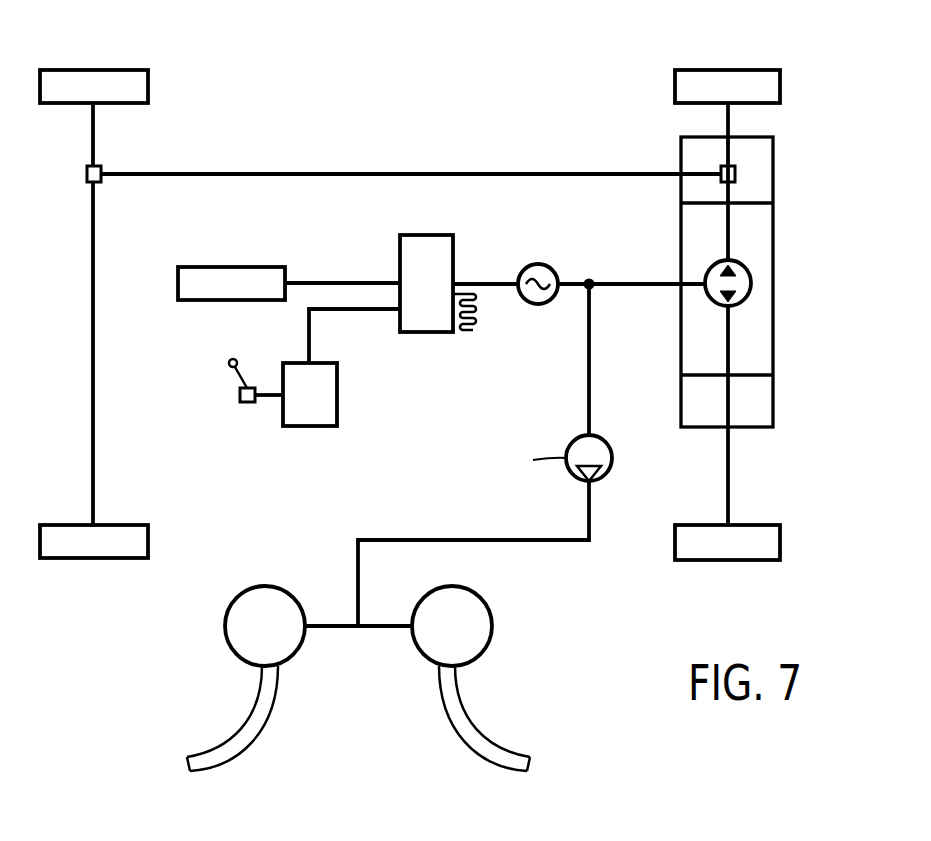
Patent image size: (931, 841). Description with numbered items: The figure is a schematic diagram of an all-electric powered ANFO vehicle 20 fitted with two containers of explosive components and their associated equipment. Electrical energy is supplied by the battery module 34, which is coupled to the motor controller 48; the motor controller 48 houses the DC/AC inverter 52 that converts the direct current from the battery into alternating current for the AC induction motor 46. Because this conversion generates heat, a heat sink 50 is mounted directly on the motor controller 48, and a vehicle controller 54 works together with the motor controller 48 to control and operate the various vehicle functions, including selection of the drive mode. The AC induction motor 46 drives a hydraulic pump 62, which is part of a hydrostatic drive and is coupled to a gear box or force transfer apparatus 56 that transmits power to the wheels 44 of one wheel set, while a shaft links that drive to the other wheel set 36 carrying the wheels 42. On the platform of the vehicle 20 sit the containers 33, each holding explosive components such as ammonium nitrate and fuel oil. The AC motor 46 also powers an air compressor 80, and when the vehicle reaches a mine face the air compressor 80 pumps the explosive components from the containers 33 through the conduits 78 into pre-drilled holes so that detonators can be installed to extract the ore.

The all-electric powered ANFO vehicle 20 is at (548, 55).
The container 33 is at (267, 586).
The battery module 34 is at (231, 267).
The wheel set 36 is at (92, 351).
The wheel 42 is at (98, 70).
The wheel 44 is at (733, 70).
The AC induction motor 46 is at (558, 276).
The motor controller 48 is at (296, 361).
The heat sink 50 is at (478, 314).
The DC/AC inverter 52 is at (400, 258).
The vehicle controller 54 is at (251, 407).
The force transfer apparatus 56 is at (774, 172).
The hydraulic pump 62 is at (749, 298).
The conduit 78 is at (243, 722).
The air compressor 80 is at (574, 441).